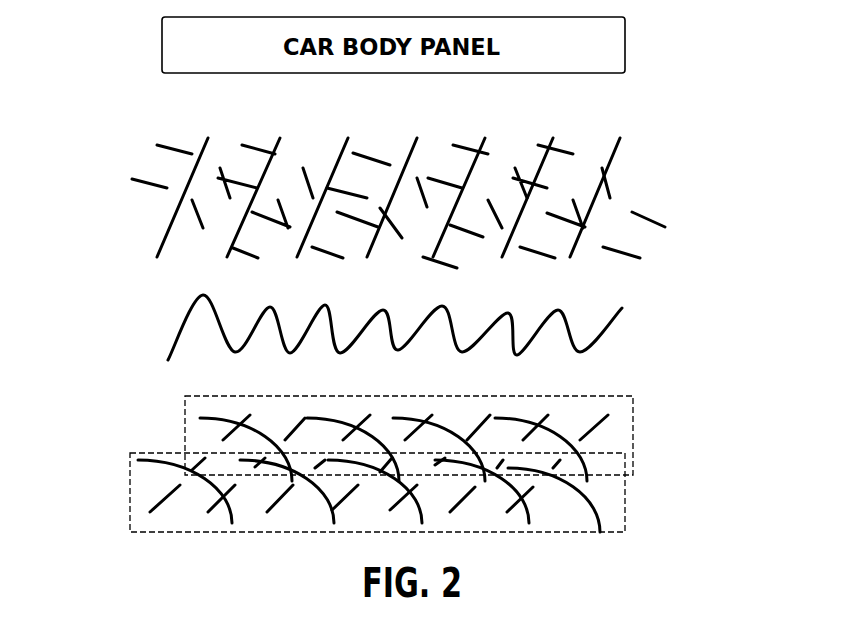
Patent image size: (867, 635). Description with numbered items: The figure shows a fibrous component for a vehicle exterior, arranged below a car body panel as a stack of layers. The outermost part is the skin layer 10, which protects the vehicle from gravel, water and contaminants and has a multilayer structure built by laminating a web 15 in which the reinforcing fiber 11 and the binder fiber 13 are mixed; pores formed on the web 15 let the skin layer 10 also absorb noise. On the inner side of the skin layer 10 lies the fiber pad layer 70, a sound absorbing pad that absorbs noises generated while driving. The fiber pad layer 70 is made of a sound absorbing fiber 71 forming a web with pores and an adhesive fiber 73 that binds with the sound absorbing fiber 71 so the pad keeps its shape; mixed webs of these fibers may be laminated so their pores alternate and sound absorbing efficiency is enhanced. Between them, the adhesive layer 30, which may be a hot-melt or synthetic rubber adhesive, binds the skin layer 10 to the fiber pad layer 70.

The fiber pad layer 70 is at (466, 203).
The adhesive fiber 73 is at (613, 162).
The sound absorbing fiber 71 is at (650, 218).
The adhesive layer 30 is at (613, 323).
The skin layer 10 is at (405, 446).
The binder fiber 13 is at (600, 432).
The reinforcing fiber 11 is at (598, 513).
The web 15 is at (185, 420).